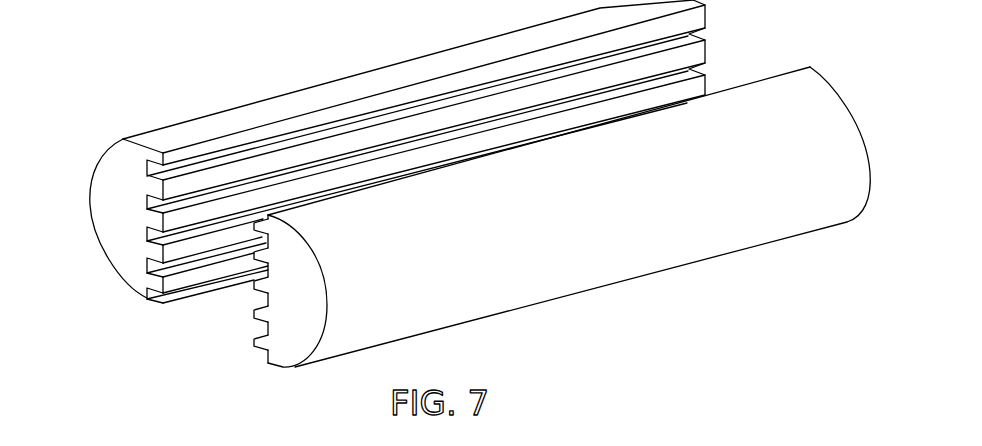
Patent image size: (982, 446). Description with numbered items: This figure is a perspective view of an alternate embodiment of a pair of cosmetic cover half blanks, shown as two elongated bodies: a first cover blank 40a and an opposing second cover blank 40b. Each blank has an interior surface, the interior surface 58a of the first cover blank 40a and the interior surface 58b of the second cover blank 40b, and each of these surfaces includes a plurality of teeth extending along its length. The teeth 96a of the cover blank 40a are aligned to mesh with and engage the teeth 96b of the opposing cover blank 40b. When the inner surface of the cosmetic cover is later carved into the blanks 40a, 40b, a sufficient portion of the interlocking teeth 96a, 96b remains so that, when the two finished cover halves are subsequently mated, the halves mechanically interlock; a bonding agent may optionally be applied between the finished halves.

The cover blank 40a is at (104, 163).
The cover blank 40b is at (280, 365).
The interior surface 58a is at (169, 309).
The interior surface 58b is at (252, 358).
The teeth 96a is at (147, 161).
The teeth 96b is at (262, 241).